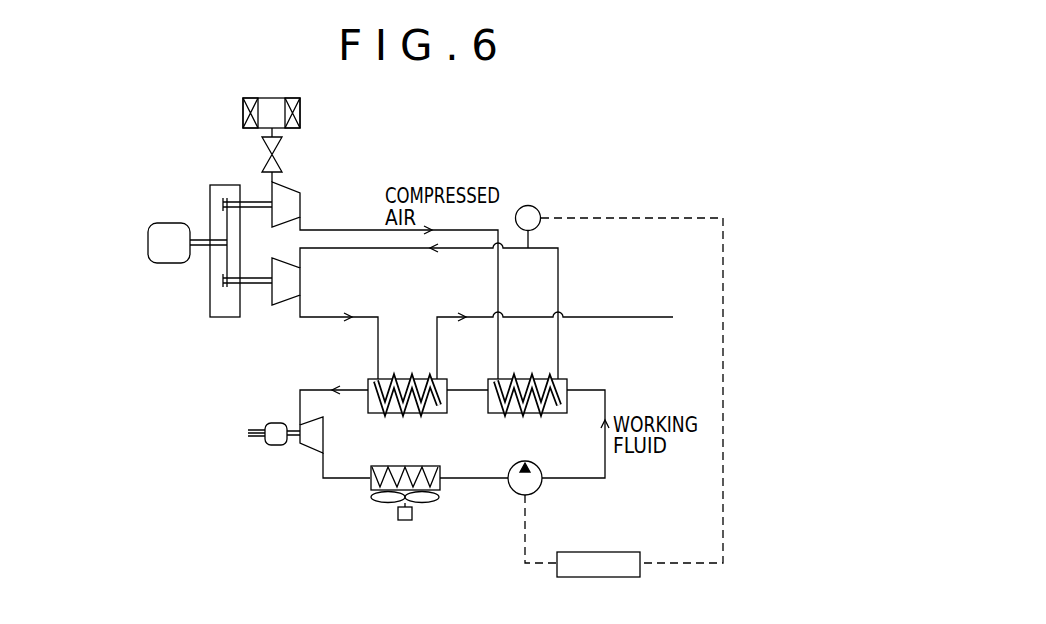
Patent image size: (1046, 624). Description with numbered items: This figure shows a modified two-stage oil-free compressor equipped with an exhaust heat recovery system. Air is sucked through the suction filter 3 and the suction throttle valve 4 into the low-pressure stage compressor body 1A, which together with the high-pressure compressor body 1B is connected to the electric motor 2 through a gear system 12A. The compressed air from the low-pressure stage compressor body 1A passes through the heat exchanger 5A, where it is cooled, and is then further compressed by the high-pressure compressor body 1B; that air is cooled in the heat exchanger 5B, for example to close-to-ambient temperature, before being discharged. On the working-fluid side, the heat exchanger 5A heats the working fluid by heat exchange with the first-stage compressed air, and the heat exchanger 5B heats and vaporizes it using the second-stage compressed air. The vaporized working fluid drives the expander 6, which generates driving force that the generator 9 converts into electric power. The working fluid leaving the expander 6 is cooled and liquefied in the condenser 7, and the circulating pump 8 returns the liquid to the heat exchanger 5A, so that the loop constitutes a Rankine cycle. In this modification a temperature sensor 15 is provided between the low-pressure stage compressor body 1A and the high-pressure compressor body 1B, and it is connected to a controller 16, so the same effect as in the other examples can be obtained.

The low-pressure stage compressor body 1A is at (300, 205).
The high-pressure compressor body 1B is at (300, 281).
The electric motor 2 is at (172, 223).
The suction filter 3 is at (300, 113).
The suction throttle valve 4 is at (282, 159).
The heat exchanger 5A is at (524, 379).
The heat exchanger 5B is at (406, 379).
The expander 6 is at (307, 448).
The condenser 7 is at (405, 466).
The circulating pump 8 is at (529, 461).
The generator 9 is at (275, 447).
The gear system 12A is at (226, 185).
The temperature sensor 15 is at (528, 206).
The controller 16 is at (600, 552).